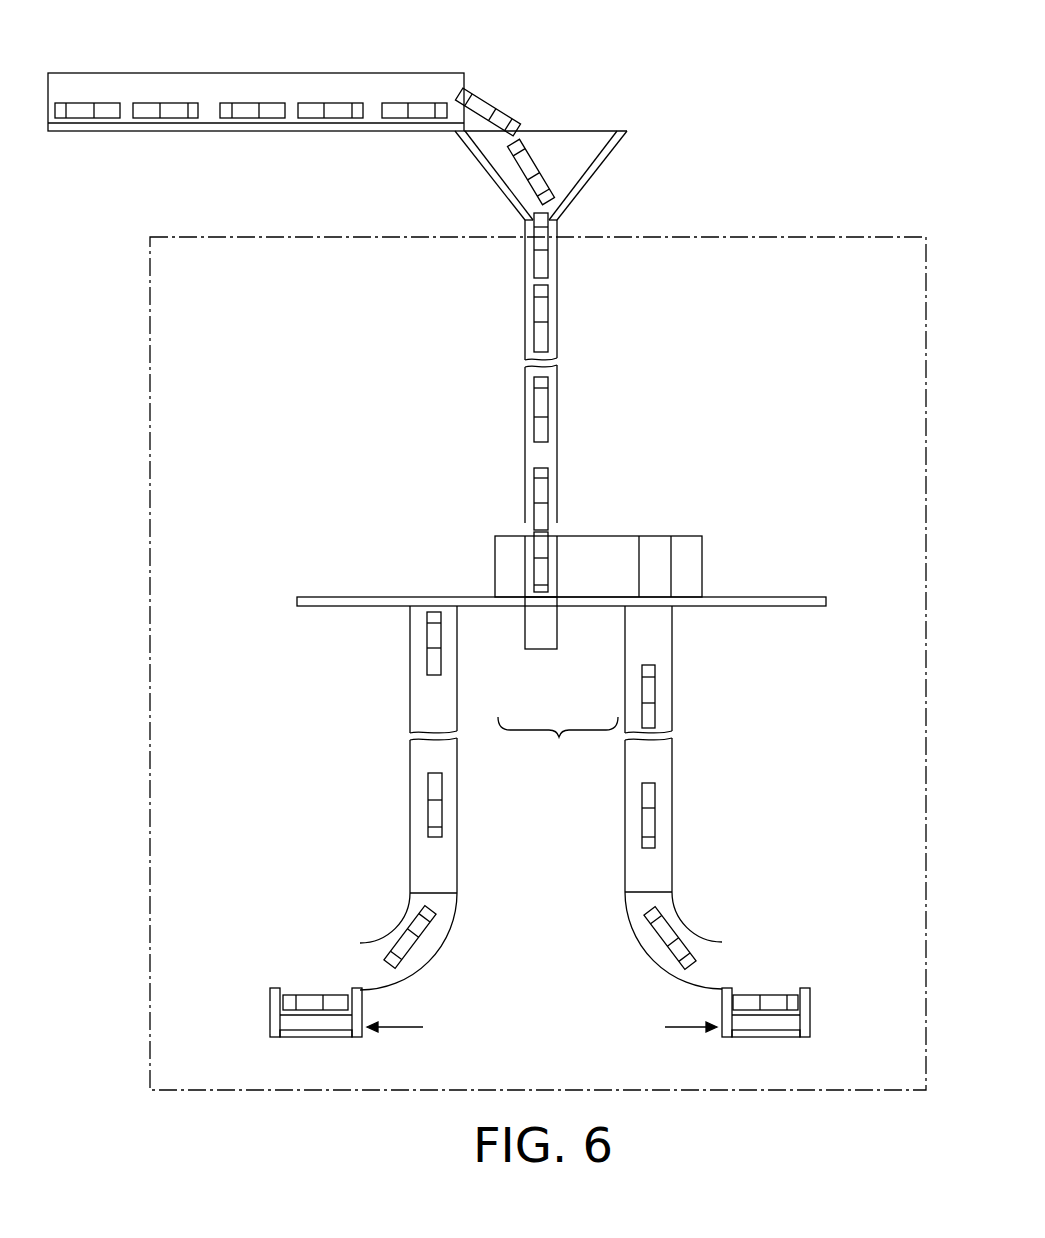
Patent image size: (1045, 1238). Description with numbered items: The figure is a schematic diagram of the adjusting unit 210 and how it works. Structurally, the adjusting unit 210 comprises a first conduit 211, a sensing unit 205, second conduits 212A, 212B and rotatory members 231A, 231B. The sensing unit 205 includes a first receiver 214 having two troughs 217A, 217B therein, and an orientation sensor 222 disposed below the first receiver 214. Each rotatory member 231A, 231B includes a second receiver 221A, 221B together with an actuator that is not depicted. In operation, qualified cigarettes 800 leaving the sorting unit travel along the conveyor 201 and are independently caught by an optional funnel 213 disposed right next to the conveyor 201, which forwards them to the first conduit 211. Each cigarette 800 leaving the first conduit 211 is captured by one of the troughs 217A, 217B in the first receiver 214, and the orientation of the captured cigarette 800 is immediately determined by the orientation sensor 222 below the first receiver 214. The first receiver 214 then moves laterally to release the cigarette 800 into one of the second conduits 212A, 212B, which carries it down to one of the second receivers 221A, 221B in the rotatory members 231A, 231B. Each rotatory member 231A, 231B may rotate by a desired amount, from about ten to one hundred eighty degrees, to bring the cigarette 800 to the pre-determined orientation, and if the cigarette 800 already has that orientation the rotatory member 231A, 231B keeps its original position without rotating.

The cigarette 800 is at (340, 110).
The conveyor 201 is at (403, 127).
The funnel 213 is at (590, 140).
The first conduit 211 is at (552, 282).
The adjusting unit 210 is at (150, 606).
The trough 217A is at (530, 548).
The trough 217B is at (656, 548).
The orientation sensor 222 is at (543, 640).
The first receiver 214 is at (688, 587).
The sensing unit 205 is at (558, 746).
The second conduit 212A is at (420, 857).
The second conduit 212B is at (660, 862).
The second receiver 221A is at (275, 1013).
The second receiver 221B is at (805, 1012).
The rotatory member 231A is at (434, 1029).
The rotatory member 231B is at (658, 1029).